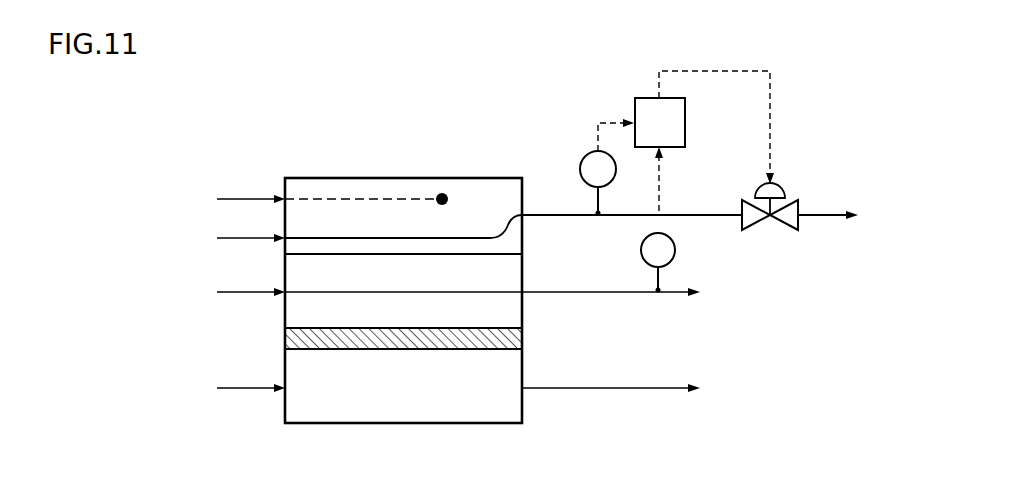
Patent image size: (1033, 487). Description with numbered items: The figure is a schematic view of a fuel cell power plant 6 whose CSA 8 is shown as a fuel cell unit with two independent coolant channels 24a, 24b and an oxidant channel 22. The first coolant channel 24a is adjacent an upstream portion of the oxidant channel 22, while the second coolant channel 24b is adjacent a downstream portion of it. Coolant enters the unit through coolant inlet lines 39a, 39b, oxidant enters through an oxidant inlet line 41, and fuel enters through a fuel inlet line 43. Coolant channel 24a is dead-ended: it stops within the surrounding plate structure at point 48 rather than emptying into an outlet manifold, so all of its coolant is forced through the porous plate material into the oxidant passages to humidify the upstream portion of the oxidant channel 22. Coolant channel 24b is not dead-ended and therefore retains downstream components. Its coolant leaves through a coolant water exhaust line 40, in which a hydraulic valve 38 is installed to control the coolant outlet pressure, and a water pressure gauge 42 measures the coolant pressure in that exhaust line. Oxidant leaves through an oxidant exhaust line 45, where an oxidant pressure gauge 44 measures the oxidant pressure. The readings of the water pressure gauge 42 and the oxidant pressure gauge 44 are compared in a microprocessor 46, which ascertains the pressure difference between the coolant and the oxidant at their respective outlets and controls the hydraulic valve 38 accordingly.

The fuel cell power plant 6 is at (572, 125).
The CSA 8 is at (363, 262).
The oxidant channel 22 is at (487, 294).
The first coolant channel 24a is at (370, 197).
The second coolant channel 24b is at (476, 236).
The hydraulic valve 38 is at (780, 186).
The coolant inlet line 39a is at (228, 198).
The coolant inlet line 39b is at (228, 238).
The coolant water exhaust line 40 is at (833, 213).
The oxidant inlet line 41 is at (233, 292).
The water pressure gauge 42 is at (586, 153).
The fuel inlet line 43 is at (440, 388).
The oxidant pressure gauge 44 is at (676, 252).
The oxidant exhaust line 45 is at (550, 292).
The microprocessor 46 is at (645, 98).
The dead-end point 48 is at (441, 192).